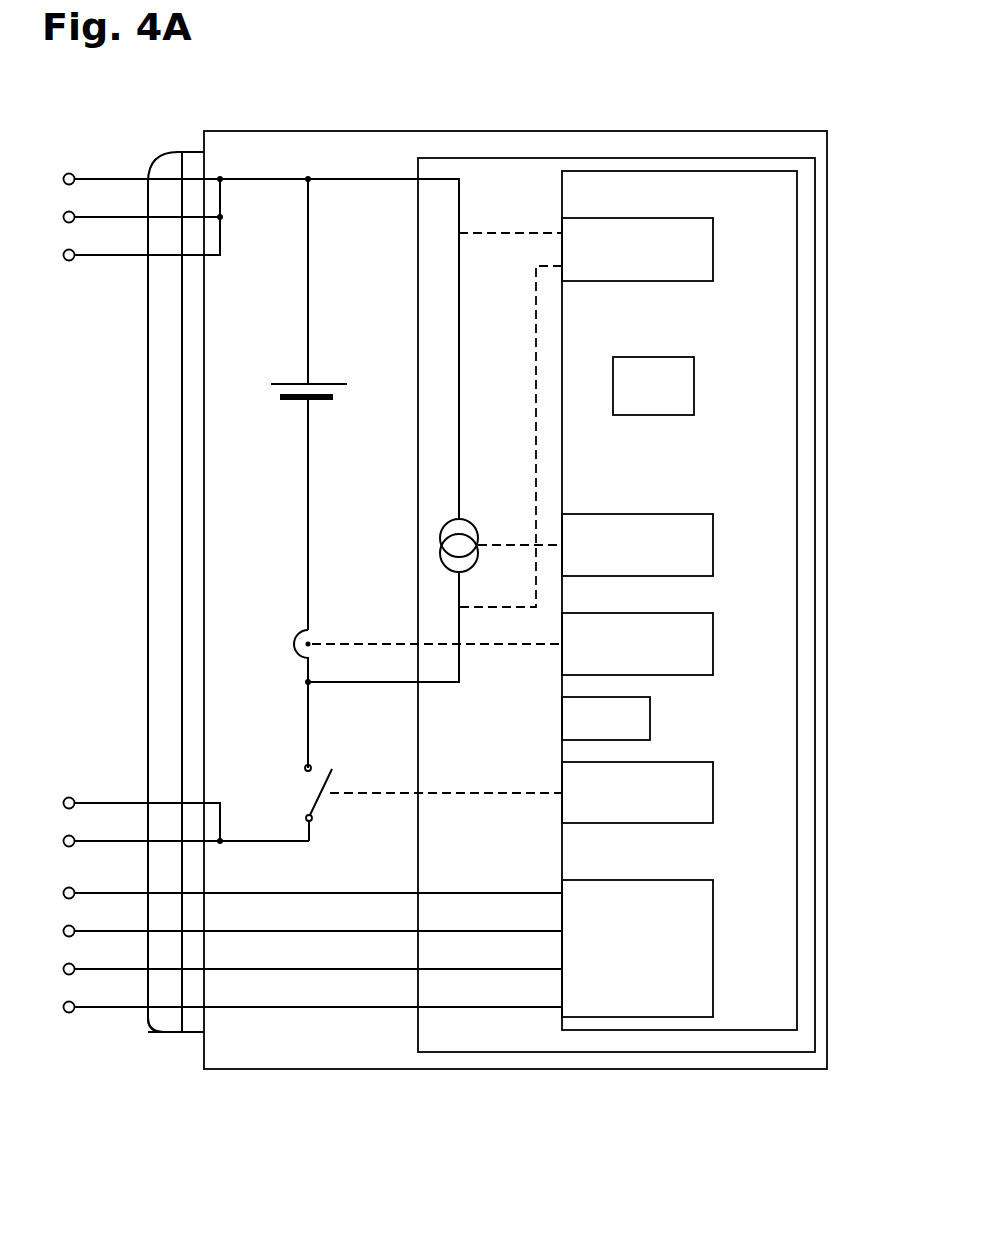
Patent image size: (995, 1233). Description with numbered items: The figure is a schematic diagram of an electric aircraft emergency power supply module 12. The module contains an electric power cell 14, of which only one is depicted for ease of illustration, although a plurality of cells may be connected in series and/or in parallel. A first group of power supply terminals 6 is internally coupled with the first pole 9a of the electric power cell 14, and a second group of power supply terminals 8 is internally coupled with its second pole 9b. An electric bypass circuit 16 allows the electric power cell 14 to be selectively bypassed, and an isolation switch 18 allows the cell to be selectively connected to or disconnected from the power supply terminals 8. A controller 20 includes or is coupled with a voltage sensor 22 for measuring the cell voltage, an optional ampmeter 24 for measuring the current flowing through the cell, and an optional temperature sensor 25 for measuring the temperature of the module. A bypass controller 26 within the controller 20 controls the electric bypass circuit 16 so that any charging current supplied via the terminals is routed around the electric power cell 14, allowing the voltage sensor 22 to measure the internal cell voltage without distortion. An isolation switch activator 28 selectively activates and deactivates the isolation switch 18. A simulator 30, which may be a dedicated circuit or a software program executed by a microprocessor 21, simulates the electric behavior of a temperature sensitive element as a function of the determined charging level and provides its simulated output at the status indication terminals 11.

The electric aircraft emergency power supply module 12 is at (655, 98).
The controller 20 is at (797, 463).
The first group of power supply terminals 6 is at (93, 163).
The second group of power supply terminals 8 is at (90, 794).
The status indication terminals 11 is at (95, 1016).
The first pole 9a is at (308, 178).
The second pole 9b is at (306, 682).
The electric power cell 14 is at (268, 398).
The electric bypass circuit 16 is at (478, 513).
The isolation switch 18 is at (296, 789).
The voltage sensor 22 is at (713, 249).
The microprocessor 21 is at (653, 357).
The bypass controller 26 is at (713, 544).
The ampmeter 24 is at (713, 644).
The temperature sensor 25 is at (650, 718).
The isolation switch activator 28 is at (713, 791).
The simulator 30 is at (713, 949).